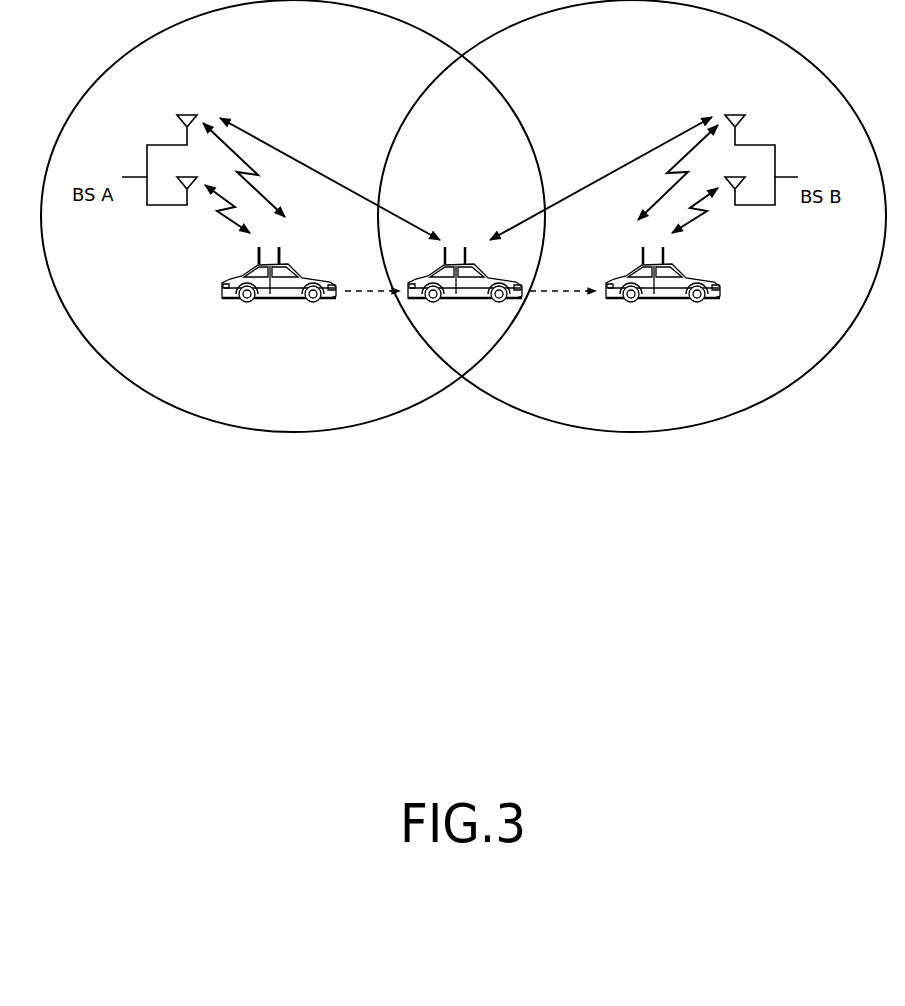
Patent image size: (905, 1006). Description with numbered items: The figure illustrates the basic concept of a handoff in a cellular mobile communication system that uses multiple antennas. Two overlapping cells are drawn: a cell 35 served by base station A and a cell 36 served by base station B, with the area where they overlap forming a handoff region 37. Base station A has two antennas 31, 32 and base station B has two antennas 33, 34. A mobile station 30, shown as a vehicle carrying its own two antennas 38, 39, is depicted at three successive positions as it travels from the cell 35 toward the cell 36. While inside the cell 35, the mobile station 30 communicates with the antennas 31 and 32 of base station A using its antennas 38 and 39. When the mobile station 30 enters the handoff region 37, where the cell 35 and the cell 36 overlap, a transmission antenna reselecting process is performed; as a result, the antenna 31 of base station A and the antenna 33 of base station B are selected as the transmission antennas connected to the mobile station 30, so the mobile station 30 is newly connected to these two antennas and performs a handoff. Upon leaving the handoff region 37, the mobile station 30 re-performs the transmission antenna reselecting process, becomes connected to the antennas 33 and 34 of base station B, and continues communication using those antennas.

The mobile station 30 is at (273, 293).
The antenna of base station A 31 is at (186, 132).
The antenna of base station A 32 is at (187, 198).
The antenna of base station B 33 is at (741, 134).
The antenna of base station B 34 is at (736, 196).
The cell 35 is at (290, 434).
The cell 36 is at (633, 434).
The handoff region 37 is at (463, 352).
The antenna 38 is at (257, 256).
The antenna 39 is at (283, 256).